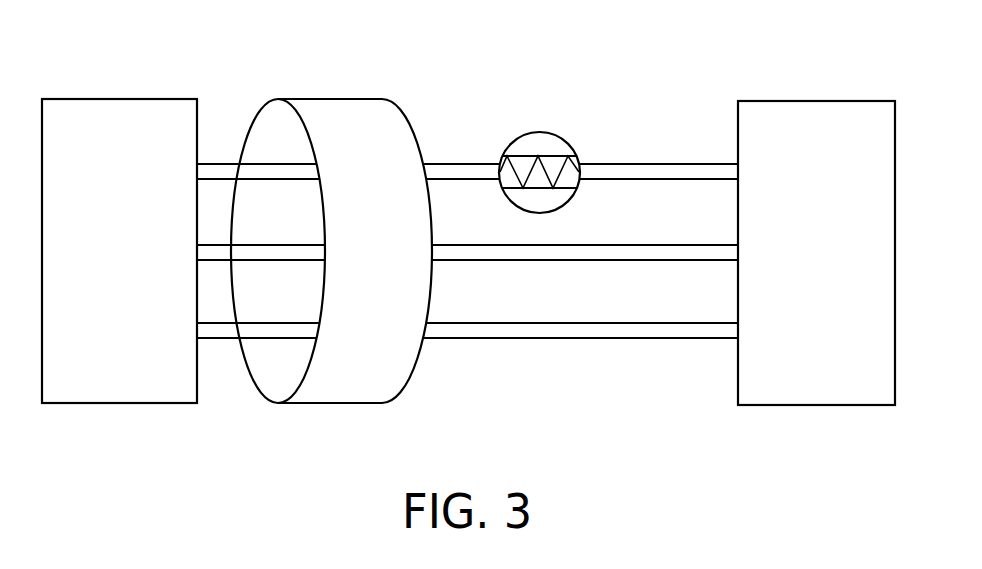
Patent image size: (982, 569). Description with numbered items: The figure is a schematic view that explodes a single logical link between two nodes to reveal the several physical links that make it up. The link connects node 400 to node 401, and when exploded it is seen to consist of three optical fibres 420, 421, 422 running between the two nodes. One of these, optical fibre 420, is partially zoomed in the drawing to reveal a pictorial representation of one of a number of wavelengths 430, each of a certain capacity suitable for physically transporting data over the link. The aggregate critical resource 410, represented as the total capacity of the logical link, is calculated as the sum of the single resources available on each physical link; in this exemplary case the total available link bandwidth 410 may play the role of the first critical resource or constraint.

The node 400 is at (133, 383).
The node 401 is at (790, 385).
The aggregate critical resource 410 is at (333, 128).
The optical fibre 420 is at (638, 172).
The optical fibre 421 is at (620, 250).
The optical fibre 422 is at (523, 330).
The wavelength 430 is at (527, 163).